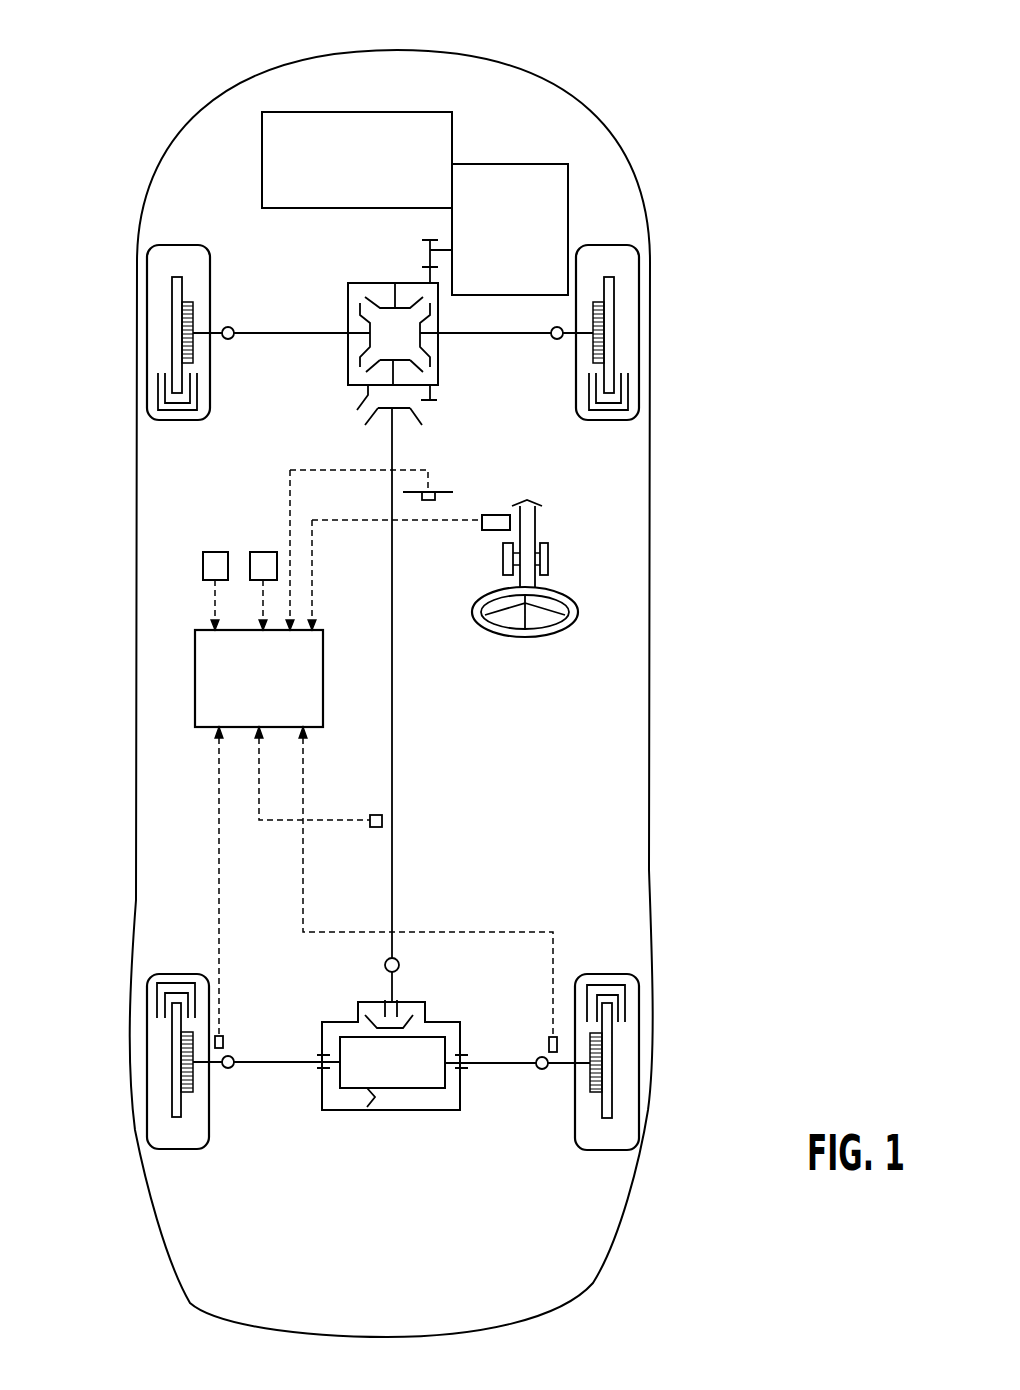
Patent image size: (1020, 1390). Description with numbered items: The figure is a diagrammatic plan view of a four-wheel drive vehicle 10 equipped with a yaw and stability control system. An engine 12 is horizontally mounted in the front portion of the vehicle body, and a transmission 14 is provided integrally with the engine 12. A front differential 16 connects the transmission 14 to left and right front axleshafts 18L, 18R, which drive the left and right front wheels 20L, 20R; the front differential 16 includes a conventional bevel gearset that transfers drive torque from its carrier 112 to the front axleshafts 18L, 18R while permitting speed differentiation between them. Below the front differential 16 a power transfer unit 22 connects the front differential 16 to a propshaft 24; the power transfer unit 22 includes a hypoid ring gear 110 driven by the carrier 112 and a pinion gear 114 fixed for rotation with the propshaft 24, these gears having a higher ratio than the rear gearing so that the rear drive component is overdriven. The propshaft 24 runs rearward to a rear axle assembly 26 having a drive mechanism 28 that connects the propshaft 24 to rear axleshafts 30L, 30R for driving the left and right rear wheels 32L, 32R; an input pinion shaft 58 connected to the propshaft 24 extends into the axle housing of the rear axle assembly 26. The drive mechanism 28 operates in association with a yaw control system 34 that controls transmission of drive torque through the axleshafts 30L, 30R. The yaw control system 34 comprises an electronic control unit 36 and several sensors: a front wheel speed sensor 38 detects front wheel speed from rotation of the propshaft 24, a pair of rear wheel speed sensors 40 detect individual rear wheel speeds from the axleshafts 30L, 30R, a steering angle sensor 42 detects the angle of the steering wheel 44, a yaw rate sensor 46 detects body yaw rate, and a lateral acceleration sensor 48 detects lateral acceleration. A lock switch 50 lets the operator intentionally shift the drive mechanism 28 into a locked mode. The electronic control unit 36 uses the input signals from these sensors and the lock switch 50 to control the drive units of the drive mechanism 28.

The four-wheel drive vehicle 10 is at (668, 488).
The engine 12 is at (343, 125).
The transmission 14 is at (512, 178).
The front differential 16 is at (383, 335).
The left front axleshaft 18L is at (291, 336).
The right front axleshaft 18R is at (537, 336).
The left front wheel 20L is at (150, 247).
The right front wheel 20R is at (633, 250).
The power transfer unit 22 is at (349, 424).
The propshaft 24 is at (392, 673).
The rear axle assembly 26 is at (445, 1040).
The drive mechanism 28 is at (403, 1084).
The left rear axleshaft 30L is at (281, 1065).
The right rear axleshaft 30R is at (502, 1067).
The left rear wheel 32L is at (148, 978).
The right rear wheel 32R is at (632, 977).
The yaw control system 34 is at (175, 650).
The electronic control unit 36 is at (210, 683).
The front wheel speed sensor 38 is at (383, 822).
The rear wheel speed sensor 40 is at (224, 1040).
The steering angle sensor 42 is at (492, 515).
The steering wheel 44 is at (562, 623).
The yaw rate sensor 46 is at (262, 552).
The lateral acceleration sensor 48 is at (214, 552).
The lock switch 50 is at (428, 500).
The input pinion shaft 58 is at (398, 998).
The hypoid ring gear 110 is at (366, 281).
The carrier 112 is at (348, 308).
The pinion gear 114 is at (414, 414).